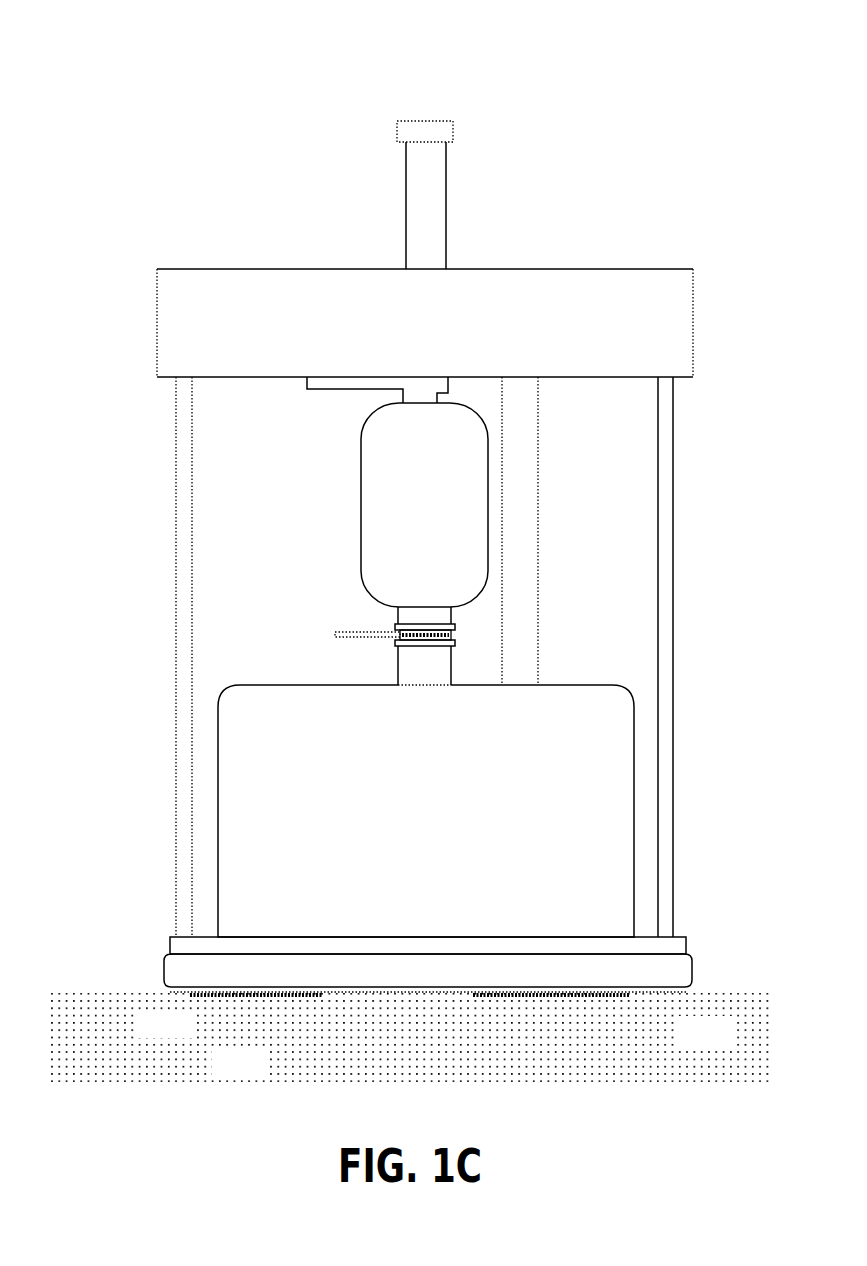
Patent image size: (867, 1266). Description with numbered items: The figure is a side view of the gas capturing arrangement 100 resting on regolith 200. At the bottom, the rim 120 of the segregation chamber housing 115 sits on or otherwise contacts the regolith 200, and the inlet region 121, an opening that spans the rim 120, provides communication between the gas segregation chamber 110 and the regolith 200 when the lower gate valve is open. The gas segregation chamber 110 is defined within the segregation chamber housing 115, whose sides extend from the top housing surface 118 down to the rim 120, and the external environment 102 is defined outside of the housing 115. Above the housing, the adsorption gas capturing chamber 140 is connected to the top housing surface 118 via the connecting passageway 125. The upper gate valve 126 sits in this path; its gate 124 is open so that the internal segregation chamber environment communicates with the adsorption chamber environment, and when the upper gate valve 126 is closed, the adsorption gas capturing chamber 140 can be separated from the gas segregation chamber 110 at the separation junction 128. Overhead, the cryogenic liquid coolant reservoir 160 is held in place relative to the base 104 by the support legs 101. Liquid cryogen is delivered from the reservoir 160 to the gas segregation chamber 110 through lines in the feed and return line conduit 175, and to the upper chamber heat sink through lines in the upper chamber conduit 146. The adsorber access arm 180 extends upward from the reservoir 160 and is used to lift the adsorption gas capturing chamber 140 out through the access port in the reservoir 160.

The gas capturing arrangement 100 is at (461, 33).
The support legs 101 is at (176, 536).
The external environment 102 is at (122, 930).
The base 104 is at (645, 938).
The gas segregation chamber 110 is at (442, 788).
The segregation chamber housing 115 is at (567, 687).
The top housing surface 118 is at (285, 687).
The rim 120 is at (240, 997).
The inlet region 121 is at (357, 1002).
The gate 124 is at (368, 632).
The connecting passageway 125 is at (398, 675).
The upper gate valve 126 is at (418, 623).
The separation junction 128 is at (415, 646).
The adsorption gas capturing chamber 140 is at (444, 476).
The upper chamber conduit 146 is at (360, 392).
The cryogenic liquid coolant reservoir 160 is at (441, 337).
The feed and return line conduit 175 is at (538, 555).
The adsorber access arm 180 is at (406, 223).
The regolith 200 is at (722, 1043).